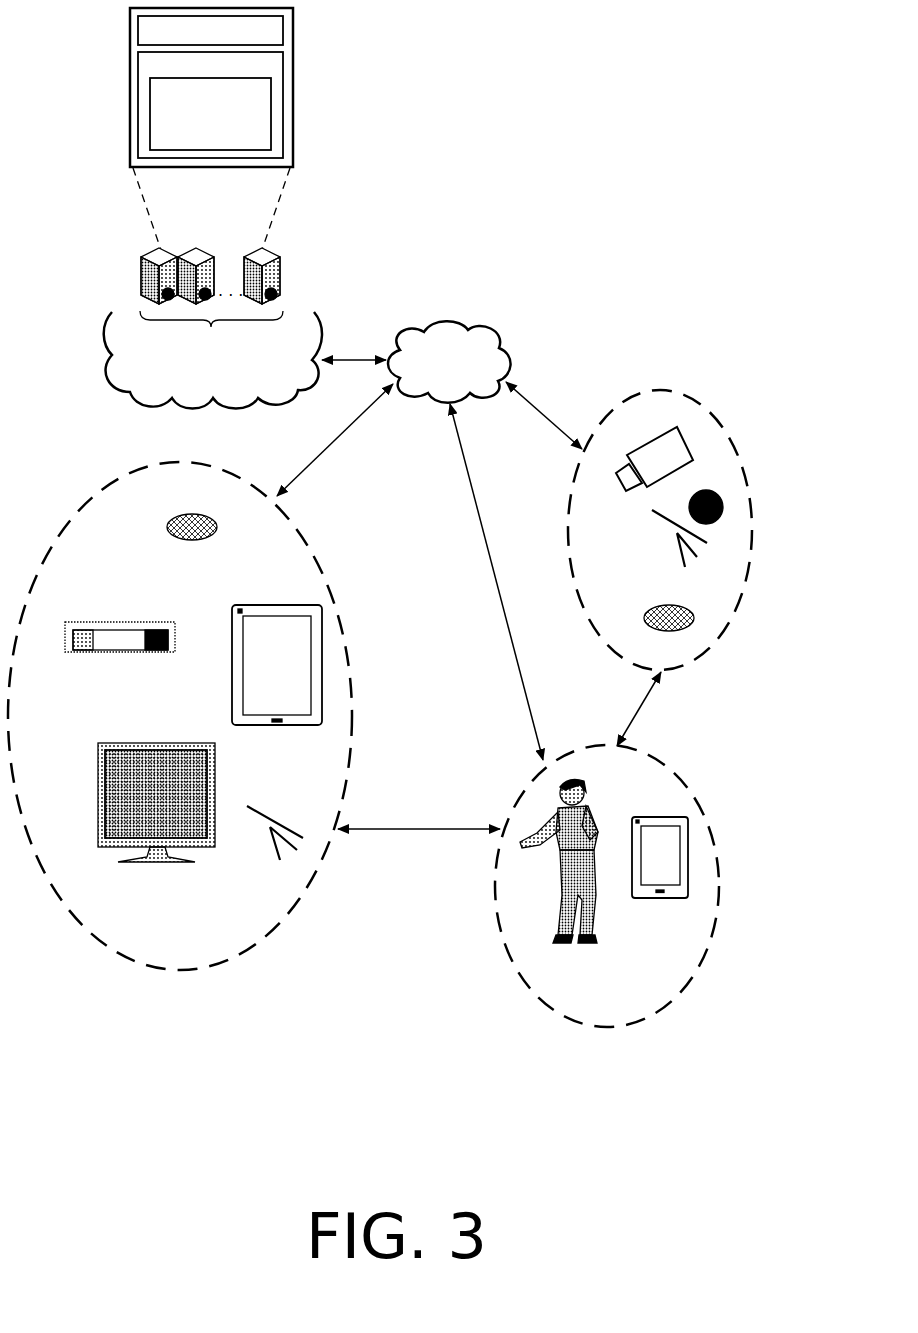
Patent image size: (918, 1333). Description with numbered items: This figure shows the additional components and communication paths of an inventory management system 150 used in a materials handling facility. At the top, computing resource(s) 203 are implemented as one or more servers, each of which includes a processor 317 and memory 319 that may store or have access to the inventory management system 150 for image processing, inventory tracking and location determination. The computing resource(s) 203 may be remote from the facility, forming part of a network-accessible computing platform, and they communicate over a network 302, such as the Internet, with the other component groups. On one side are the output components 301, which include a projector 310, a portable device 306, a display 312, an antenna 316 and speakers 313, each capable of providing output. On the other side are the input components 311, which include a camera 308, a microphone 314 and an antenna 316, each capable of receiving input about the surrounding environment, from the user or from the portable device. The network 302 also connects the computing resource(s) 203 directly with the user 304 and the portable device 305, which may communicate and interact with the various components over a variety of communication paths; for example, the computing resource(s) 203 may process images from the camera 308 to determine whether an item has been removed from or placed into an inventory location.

The processor 317 is at (210, 30).
The memory 319 is at (210, 105).
The inventory management system 150 is at (210, 114).
The computing resource(s) 203 is at (213, 360).
The network 302 is at (449, 362).
The output components 301 is at (110, 953).
The speakers 313 is at (188, 542).
The projector 310 is at (130, 651).
The portable device 306 is at (300, 728).
The display 312 is at (167, 862).
The antenna 316 is at (280, 862).
The input components 311 is at (660, 389).
The camera 308 is at (703, 488).
The microphone 314 is at (665, 630).
The user 304 is at (553, 898).
The portable device 305 is at (660, 817).